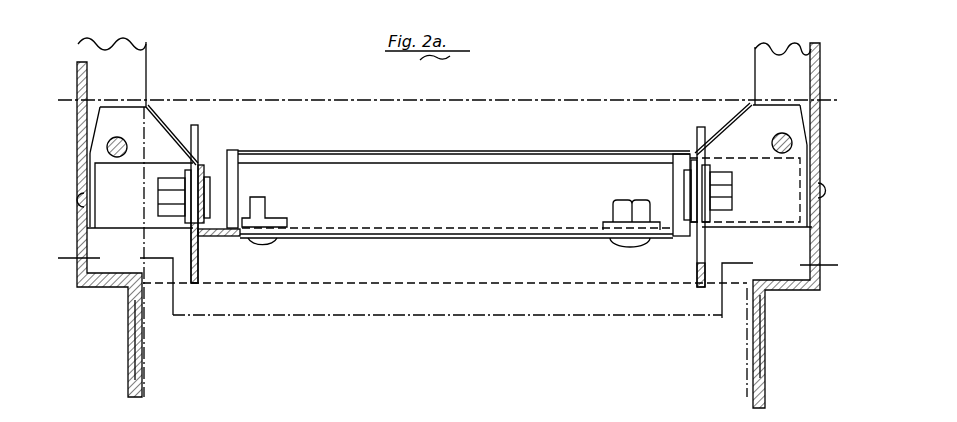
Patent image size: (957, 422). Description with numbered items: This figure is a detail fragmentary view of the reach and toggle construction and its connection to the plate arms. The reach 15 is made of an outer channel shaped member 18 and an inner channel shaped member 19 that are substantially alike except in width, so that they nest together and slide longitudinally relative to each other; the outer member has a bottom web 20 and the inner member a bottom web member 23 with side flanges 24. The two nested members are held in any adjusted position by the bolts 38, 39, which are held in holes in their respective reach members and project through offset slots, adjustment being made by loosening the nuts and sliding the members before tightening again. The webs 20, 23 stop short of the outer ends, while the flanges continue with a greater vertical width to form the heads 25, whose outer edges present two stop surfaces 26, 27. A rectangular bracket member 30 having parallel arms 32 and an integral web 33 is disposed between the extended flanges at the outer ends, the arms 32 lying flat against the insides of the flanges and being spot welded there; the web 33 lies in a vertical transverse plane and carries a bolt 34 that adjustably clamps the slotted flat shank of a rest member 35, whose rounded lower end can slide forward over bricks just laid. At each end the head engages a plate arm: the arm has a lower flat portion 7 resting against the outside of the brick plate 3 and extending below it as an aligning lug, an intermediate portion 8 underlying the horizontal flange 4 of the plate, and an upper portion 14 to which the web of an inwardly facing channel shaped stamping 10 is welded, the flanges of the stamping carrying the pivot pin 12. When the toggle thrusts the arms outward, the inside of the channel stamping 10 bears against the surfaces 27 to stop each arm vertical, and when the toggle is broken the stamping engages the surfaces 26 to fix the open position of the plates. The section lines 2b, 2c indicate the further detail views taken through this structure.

The channel shaped stamping 10 is at (78, 41).
The upper portion of the arm 14 is at (74, 258).
The head 25 is at (127, 104).
The stop surface 26 is at (98, 108).
The section line 2b is at (162, 99).
The section line 2c is at (100, 261).
The pivot pin 12 is at (117, 158).
The stop surface 27 is at (87, 213).
The horizontal flange 4 is at (118, 278).
The intermediate portion 8 is at (140, 290).
The brick plate 3 is at (142, 362).
The lower flat portion 7 is at (128, 382).
The rest member 35 is at (198, 253).
The rectangular bracket member 30 is at (198, 140).
The web 33 is at (205, 170).
The bolt 34 is at (166, 159).
The arm 32 is at (150, 214).
The bottom web 20 is at (430, 239).
The bottom web member 23 is at (387, 230).
The outer channel shaped member 18 is at (388, 173).
The reach 15 is at (480, 136).
The inner channel shaped member 19 is at (665, 150).
The side flange 24 is at (262, 207).
The bolt 38 is at (273, 243).
The bolt 39 is at (617, 247).